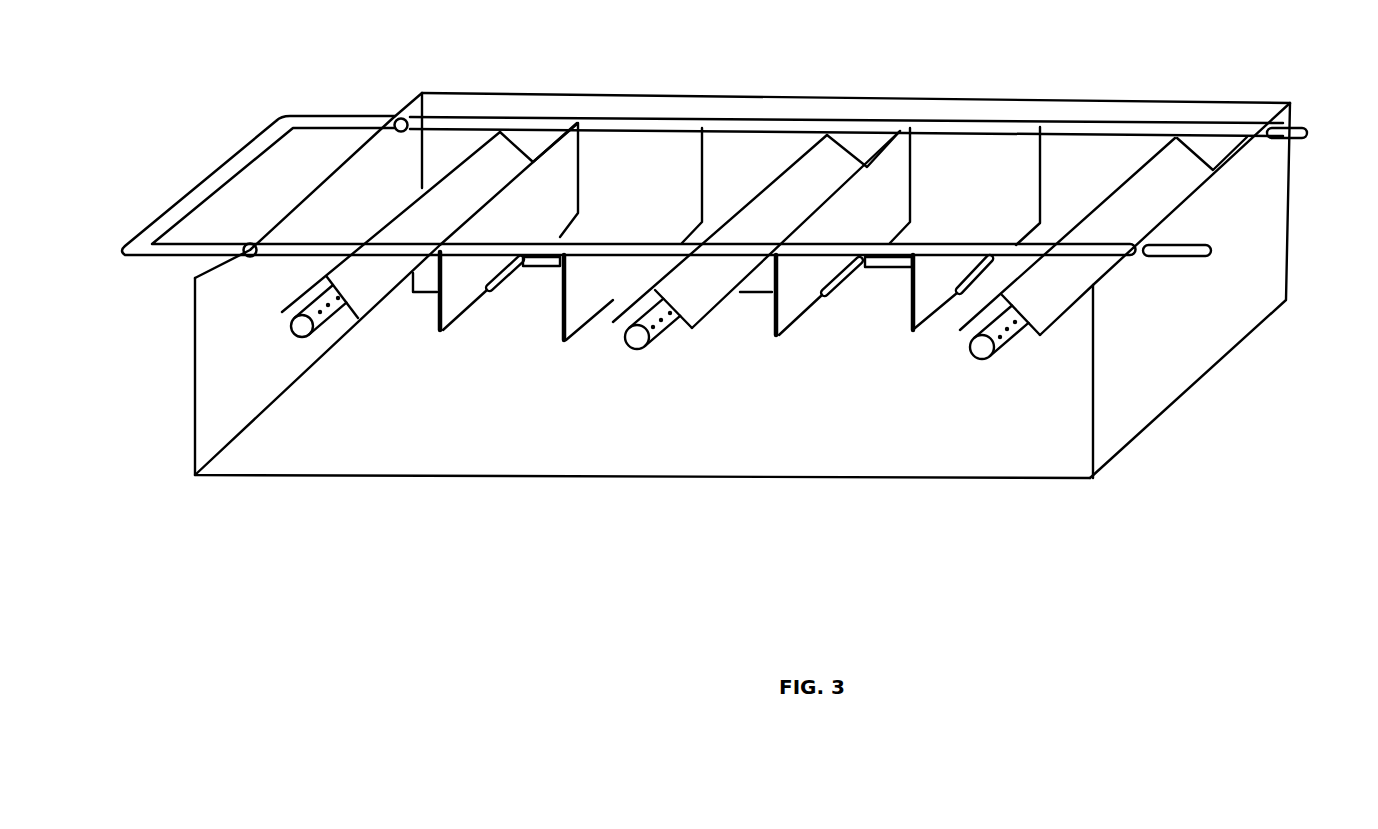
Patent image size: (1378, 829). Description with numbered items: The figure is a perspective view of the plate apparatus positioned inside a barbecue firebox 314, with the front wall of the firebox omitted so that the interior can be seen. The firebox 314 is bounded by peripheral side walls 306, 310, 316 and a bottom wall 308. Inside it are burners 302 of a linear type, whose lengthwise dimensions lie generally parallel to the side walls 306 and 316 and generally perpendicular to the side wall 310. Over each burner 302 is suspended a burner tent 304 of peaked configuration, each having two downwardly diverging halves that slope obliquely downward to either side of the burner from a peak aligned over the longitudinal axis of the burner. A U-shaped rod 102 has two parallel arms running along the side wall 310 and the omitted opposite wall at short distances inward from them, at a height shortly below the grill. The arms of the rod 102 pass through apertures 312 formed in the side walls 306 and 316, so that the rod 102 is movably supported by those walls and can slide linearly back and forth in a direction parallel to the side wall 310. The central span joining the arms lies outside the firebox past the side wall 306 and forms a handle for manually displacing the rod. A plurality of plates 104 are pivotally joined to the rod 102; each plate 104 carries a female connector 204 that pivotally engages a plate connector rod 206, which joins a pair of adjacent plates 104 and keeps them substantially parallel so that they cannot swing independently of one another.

The U-shaped rod 102 is at (223, 160).
The plate 104 is at (555, 185).
The female connector 204 is at (493, 282).
The plate connector rod 206 is at (541, 266).
The burner 302 is at (292, 330).
The burner tent 304 is at (363, 283).
The side wall 306 is at (321, 206).
The bottom wall 308 is at (626, 448).
The side wall 310 is at (719, 174).
The aperture 312 is at (396, 117).
The barbecue firebox 314 is at (1189, 445).
The side wall 316 is at (1143, 326).